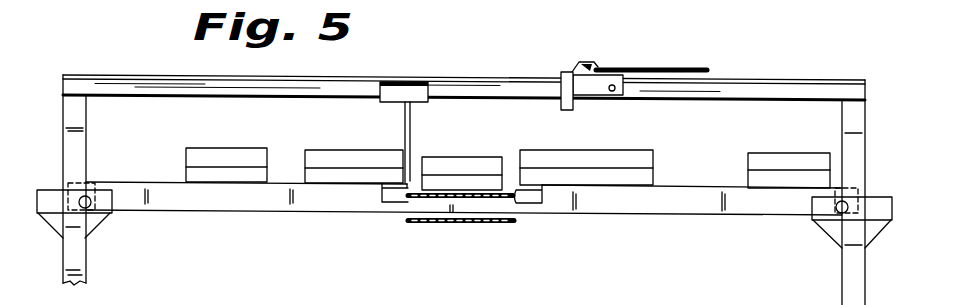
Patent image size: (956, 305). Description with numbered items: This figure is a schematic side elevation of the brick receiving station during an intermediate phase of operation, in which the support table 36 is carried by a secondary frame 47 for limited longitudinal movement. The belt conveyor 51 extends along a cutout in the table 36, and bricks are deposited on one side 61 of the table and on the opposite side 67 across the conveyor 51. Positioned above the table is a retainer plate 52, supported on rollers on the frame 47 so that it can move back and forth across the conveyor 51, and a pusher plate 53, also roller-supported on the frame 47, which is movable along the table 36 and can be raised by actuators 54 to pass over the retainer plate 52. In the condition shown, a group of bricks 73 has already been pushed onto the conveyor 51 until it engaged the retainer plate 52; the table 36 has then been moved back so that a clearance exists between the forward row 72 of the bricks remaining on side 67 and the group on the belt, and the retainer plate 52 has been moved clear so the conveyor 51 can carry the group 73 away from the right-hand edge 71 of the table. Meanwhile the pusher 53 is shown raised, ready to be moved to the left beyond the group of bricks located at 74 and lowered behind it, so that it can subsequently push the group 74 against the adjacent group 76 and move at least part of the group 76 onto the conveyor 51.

The support table 36 is at (670, 215).
The secondary frame 47 is at (124, 82).
The belt conveyor 51 is at (417, 196).
The retainer plate 52 is at (405, 132).
The pusher plate 53 is at (670, 67).
The actuator 54 is at (572, 105).
The side of the support table 61 is at (125, 182).
The side of the platform 67 is at (705, 188).
The right-hand edge 71 is at (517, 203).
The forward row of bricks 72 is at (517, 163).
The group of bricks 73 is at (458, 160).
The group of bricks 74 is at (223, 155).
The group of bricks 76 is at (330, 157).